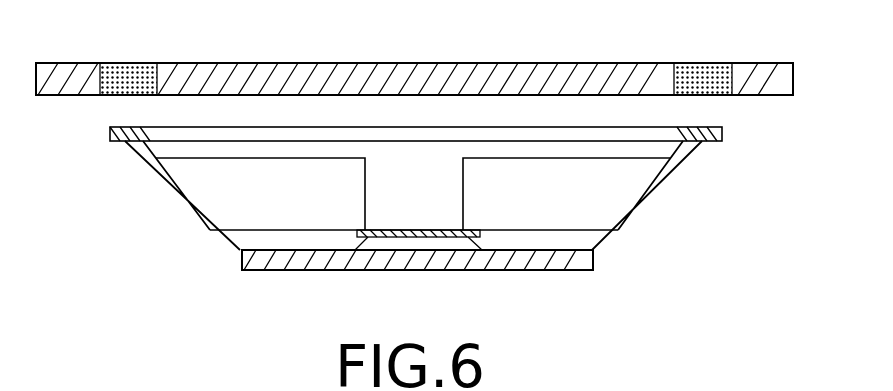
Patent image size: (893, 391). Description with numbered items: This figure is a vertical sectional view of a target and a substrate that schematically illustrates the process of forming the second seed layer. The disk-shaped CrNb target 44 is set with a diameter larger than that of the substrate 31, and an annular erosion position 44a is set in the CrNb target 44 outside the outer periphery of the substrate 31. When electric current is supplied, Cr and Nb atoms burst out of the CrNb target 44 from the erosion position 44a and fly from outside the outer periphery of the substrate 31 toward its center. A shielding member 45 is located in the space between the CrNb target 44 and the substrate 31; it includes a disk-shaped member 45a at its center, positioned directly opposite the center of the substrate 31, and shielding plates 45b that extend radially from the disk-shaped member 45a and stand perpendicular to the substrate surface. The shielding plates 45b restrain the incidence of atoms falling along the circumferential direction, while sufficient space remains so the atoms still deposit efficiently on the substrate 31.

The substrate 31 is at (592, 267).
The CrNb target 44 is at (277, 63).
The annular erosion position 44a is at (478, 250).
The shielding member 45 is at (722, 137).
The disk-shaped member 45a is at (388, 238).
The shielding plates 45b is at (195, 202).